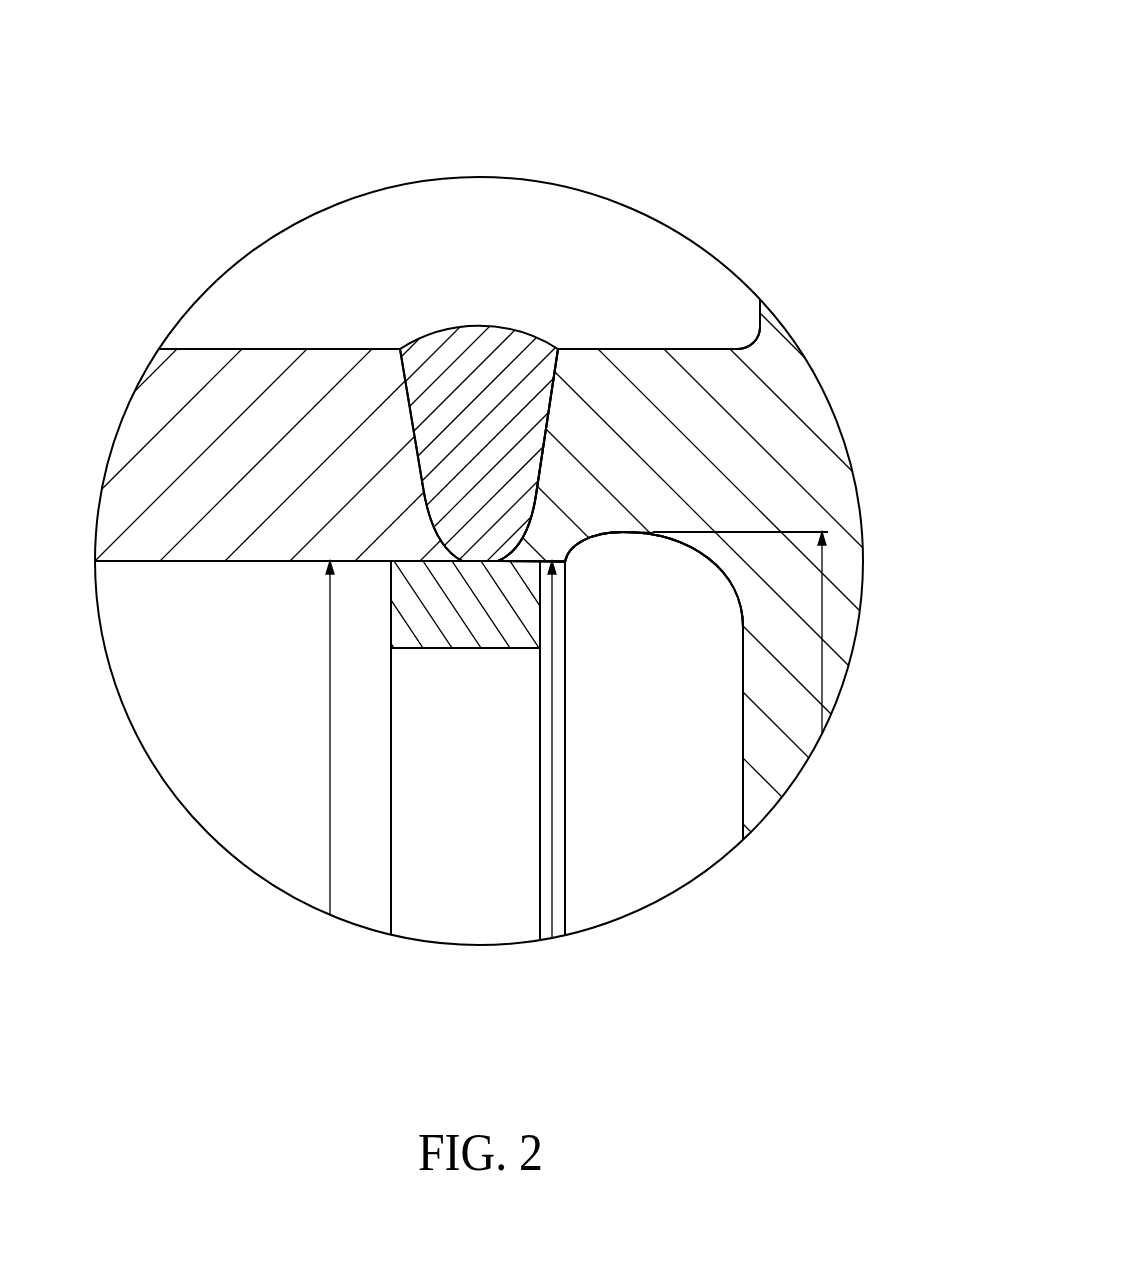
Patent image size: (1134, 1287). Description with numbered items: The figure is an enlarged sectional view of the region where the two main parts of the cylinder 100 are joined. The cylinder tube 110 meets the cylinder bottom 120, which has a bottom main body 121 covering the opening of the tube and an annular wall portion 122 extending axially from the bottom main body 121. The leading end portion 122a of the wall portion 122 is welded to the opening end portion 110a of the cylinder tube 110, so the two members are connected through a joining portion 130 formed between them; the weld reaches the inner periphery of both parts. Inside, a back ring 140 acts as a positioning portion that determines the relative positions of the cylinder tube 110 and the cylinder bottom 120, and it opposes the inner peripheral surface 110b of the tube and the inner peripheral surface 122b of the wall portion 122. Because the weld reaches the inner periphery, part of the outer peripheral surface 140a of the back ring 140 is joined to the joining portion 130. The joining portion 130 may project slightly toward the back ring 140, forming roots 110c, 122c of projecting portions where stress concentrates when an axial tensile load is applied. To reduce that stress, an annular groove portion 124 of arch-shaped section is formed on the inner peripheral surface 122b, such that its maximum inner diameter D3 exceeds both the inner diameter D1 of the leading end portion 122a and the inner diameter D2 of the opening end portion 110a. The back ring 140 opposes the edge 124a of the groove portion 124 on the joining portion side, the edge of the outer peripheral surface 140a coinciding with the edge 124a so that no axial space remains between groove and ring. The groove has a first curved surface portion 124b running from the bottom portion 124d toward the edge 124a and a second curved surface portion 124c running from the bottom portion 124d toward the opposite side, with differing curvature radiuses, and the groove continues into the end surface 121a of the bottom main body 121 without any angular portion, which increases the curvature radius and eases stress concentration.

The cylinder 100 is at (717, 297).
The cylinder tube 110 is at (217, 349).
The opening end portion 110a is at (413, 390).
The inner peripheral surface 110b is at (303, 562).
The root 110c is at (447, 558).
The cylinder bottom 120 is at (727, 349).
The bottom main body 121 is at (798, 757).
The end surface 121a is at (744, 790).
The wall portion 122 is at (655, 383).
The leading end portion 122a is at (545, 390).
The inner peripheral surface 122b is at (534, 563).
The root 122c is at (510, 558).
The groove portion 124 is at (688, 555).
The edge 124a is at (570, 567).
The first curved surface portion 124b is at (599, 542).
The second curved surface portion 124c is at (667, 540).
The bottom portion 124d is at (625, 535).
The joining portion 130 is at (466, 337).
The back ring 140 is at (443, 630).
The outer peripheral surface 140a is at (398, 561).
The inner diameter of the leading end portion D1 is at (552, 895).
The inner diameter of the opening end portion D2 is at (330, 877).
The maximum inner diameter of the groove portion D3 is at (822, 614).